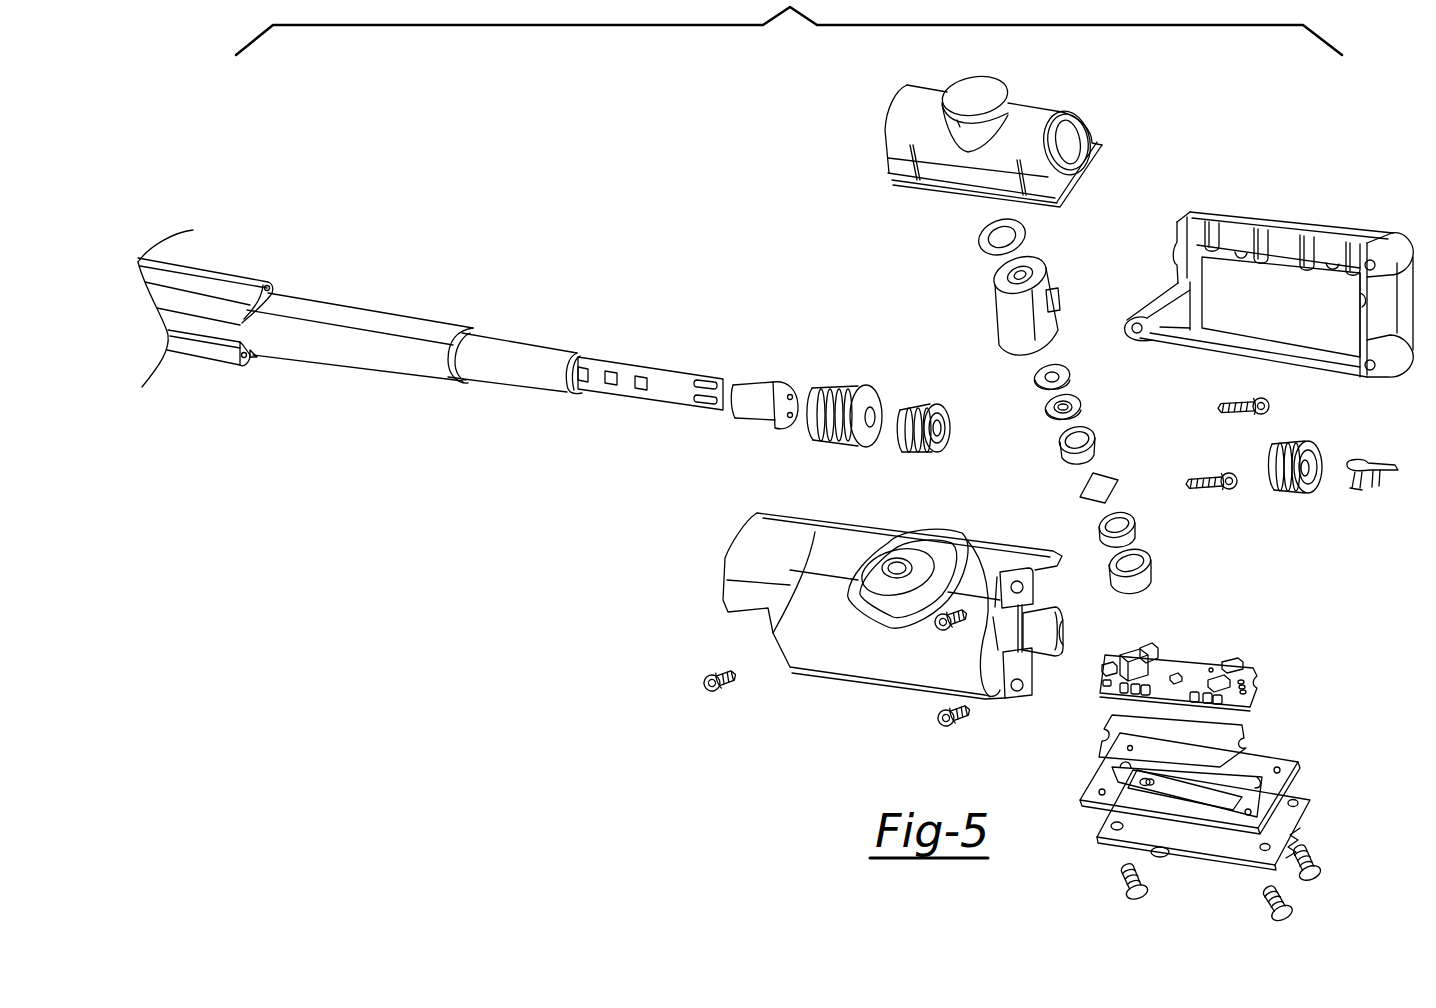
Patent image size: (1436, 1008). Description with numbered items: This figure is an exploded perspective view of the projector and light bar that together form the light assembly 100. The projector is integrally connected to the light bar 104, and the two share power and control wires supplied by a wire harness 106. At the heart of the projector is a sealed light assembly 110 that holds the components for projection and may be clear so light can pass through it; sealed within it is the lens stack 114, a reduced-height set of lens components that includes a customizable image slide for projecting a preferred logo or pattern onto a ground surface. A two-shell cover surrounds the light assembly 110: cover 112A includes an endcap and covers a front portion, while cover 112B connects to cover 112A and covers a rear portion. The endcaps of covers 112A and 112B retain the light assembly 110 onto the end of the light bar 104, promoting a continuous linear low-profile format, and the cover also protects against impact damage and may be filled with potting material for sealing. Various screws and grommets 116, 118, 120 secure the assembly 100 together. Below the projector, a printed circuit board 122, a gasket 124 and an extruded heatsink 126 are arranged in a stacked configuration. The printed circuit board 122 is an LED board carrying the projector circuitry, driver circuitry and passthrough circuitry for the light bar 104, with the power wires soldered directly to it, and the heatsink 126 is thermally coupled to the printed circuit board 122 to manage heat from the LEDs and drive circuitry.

The light assembly 100 is at (718, 192).
The light bar 104 is at (228, 262).
The wire harness 106 is at (1382, 473).
The light assembly 110 is at (1038, 110).
The cover 112A is at (901, 652).
The cover 112B is at (1332, 237).
The lens stack 114 is at (1165, 607).
The screws and grommets 116 is at (866, 388).
The screws and grommets 118 is at (932, 402).
The screws and grommets 120 is at (1290, 480).
The printed circuit board 122 is at (1183, 667).
The gasket 124 is at (1287, 765).
The extruded heatsink 126 is at (1223, 840).